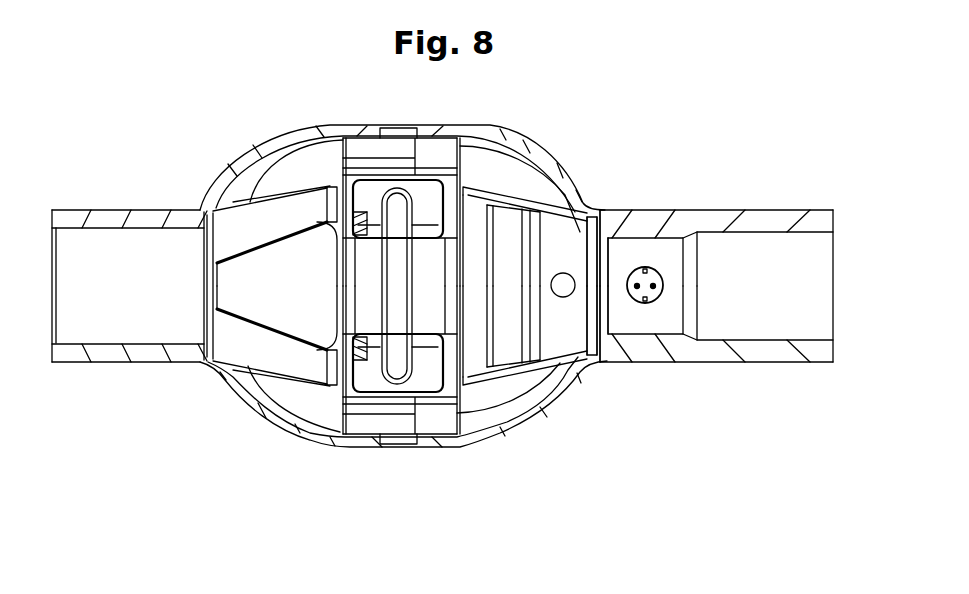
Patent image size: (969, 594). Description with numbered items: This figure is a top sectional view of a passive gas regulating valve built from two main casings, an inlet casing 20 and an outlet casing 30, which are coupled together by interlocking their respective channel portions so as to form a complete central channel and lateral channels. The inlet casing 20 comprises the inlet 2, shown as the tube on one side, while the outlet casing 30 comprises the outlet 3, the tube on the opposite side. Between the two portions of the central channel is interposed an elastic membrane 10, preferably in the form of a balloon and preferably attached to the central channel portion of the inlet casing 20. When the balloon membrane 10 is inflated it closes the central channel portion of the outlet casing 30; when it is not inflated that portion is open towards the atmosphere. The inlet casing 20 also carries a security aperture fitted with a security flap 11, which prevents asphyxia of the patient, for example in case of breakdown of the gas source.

The inlet 2 is at (103, 313).
The outlet 3 is at (783, 320).
The elastic membrane 10 is at (398, 332).
The security flap 11 is at (288, 285).
The inlet casing 20 is at (183, 385).
The outlet casing 30 is at (717, 386).